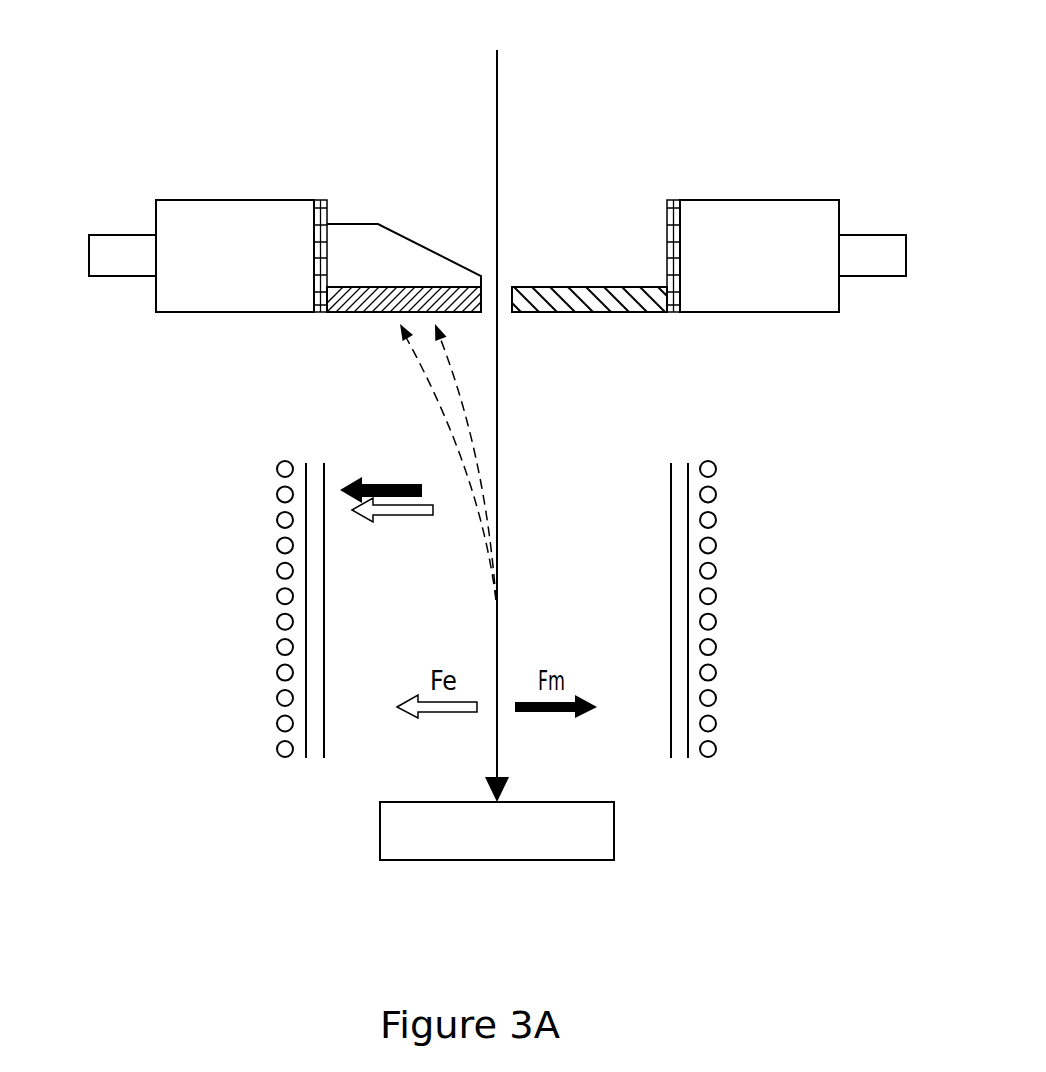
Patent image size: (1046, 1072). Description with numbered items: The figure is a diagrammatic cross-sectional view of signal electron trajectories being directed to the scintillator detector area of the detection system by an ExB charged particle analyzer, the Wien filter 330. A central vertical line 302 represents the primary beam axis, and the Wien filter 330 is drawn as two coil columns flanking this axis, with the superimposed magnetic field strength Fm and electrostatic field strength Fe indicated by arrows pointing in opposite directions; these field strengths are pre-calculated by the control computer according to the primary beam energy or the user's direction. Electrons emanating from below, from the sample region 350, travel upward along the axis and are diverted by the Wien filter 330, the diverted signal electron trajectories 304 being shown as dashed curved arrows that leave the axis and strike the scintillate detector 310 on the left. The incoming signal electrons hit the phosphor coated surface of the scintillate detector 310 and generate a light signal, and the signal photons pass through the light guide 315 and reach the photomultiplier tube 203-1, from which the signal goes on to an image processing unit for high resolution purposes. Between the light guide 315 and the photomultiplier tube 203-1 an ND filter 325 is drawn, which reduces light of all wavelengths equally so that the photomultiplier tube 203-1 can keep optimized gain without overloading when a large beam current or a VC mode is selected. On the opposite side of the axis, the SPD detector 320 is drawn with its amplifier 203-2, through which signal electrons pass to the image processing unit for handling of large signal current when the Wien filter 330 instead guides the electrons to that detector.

The electron beam 302 is at (503, 407).
The photomultiplier tube 203-1 is at (213, 213).
The amplifier 203-2 is at (742, 210).
The ND filter 325 is at (323, 208).
The light guide 315 is at (404, 257).
The scintillate detector 310 is at (381, 313).
The SPD detector 320 is at (568, 313).
The deflected electron trajectories 304 is at (438, 395).
The Wien filter 330 is at (728, 607).
The detector 350 is at (380, 828).